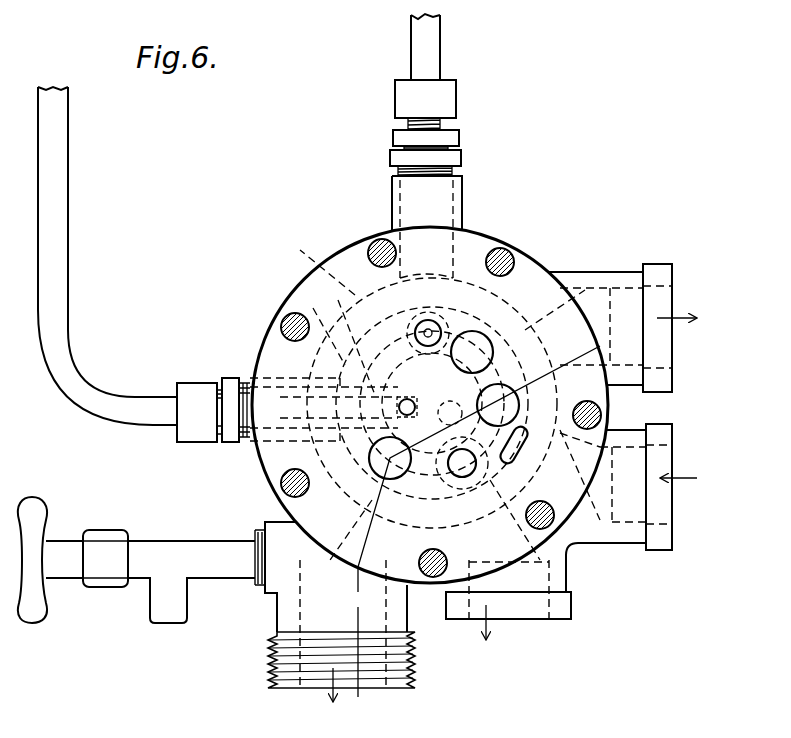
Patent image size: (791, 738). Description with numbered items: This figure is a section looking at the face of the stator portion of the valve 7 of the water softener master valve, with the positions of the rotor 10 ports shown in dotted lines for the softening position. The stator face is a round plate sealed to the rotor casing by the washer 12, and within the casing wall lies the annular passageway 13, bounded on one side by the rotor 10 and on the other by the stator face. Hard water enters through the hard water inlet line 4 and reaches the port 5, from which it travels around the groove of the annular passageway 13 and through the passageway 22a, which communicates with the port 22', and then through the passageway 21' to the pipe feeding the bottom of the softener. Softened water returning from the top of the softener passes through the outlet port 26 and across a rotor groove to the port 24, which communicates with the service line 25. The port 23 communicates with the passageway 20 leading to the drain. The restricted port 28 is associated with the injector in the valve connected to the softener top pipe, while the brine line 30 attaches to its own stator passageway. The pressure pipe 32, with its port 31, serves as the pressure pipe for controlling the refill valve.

The hard water inlet line 4 is at (672, 437).
The port 5 is at (528, 450).
The stator portion of the valve 7 is at (306, 268).
The rotor 10 is at (340, 341).
The washer 12 is at (672, 340).
The annular passageway 13 is at (327, 363).
The passageway 20 is at (512, 610).
The passageway of the stator 21' is at (340, 622).
The port 22' is at (365, 469).
The passageway 22a is at (390, 532).
The port 23 is at (468, 460).
The port 24 is at (500, 395).
The service line 25 is at (672, 285).
The outlet port 26 is at (480, 345).
The restricted port 28 is at (418, 343).
The brine line 30 is at (422, 55).
The port 31 is at (407, 398).
The pressure pipe 32 is at (68, 302).